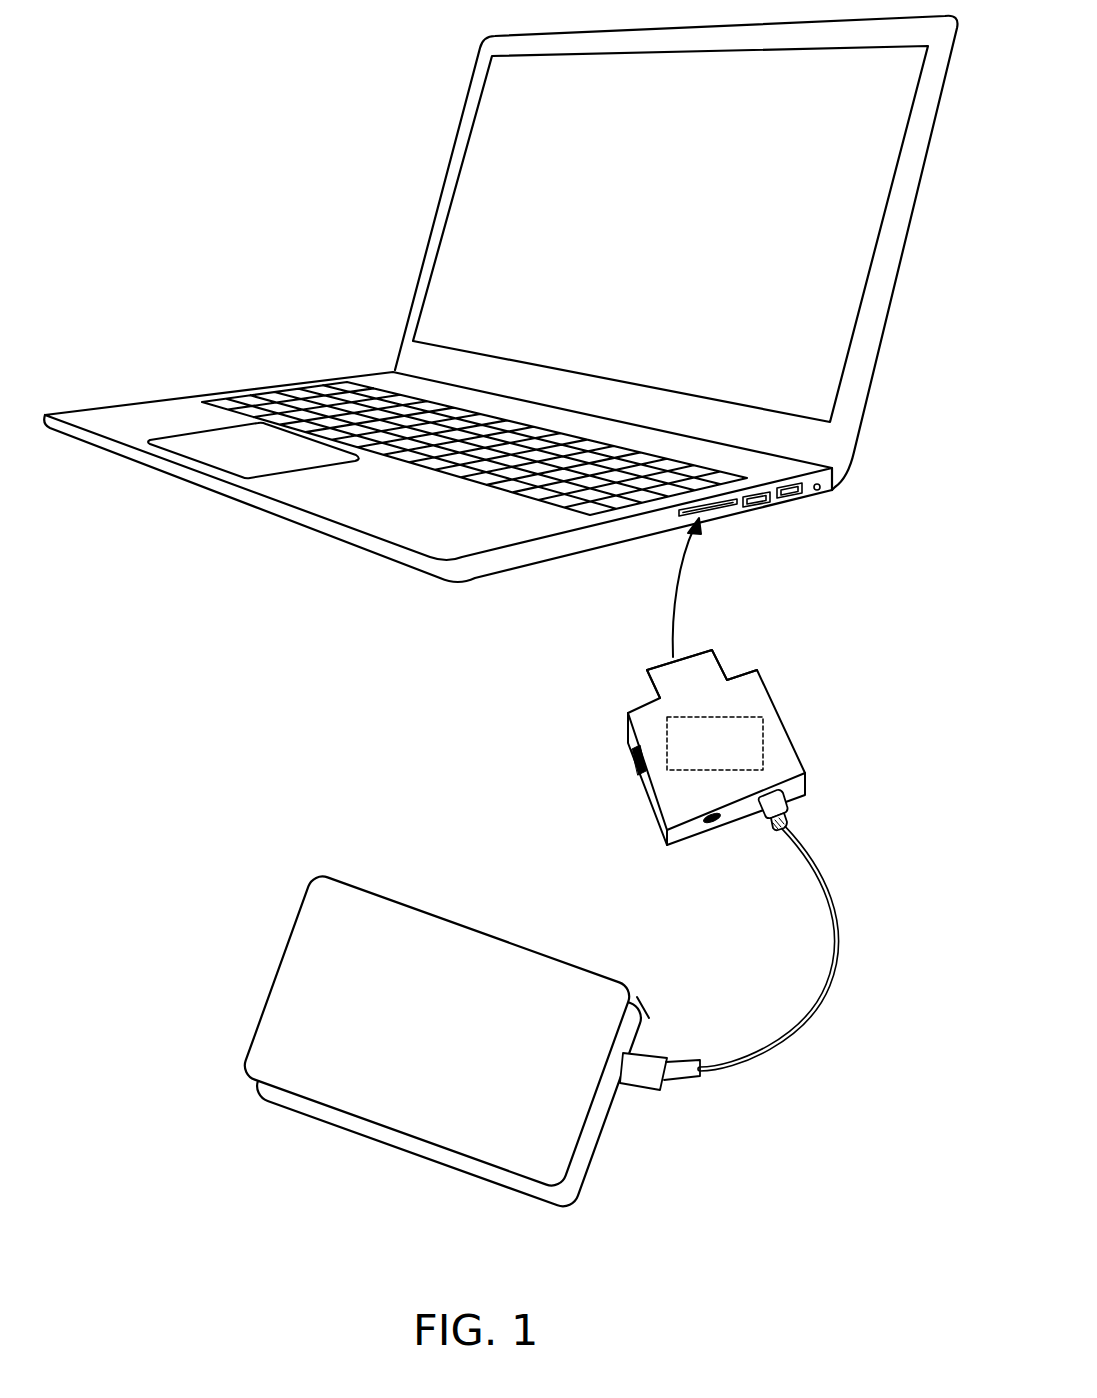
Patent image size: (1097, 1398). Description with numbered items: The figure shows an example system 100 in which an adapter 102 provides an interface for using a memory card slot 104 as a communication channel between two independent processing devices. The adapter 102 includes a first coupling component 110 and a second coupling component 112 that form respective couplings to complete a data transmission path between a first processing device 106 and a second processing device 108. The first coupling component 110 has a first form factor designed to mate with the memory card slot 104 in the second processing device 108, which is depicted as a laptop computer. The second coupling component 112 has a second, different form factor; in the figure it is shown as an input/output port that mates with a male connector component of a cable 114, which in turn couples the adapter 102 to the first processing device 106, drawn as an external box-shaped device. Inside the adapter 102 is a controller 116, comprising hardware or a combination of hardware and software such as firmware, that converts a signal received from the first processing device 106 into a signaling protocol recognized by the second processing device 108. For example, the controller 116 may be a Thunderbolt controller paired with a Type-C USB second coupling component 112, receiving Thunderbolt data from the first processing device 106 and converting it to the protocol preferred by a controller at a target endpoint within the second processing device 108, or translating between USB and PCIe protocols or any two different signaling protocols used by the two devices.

The system 100 is at (188, 104).
The adapter 102 is at (778, 710).
The memory card slot 104 is at (680, 520).
The first processing device 106 is at (431, 1053).
The second processing device 108 is at (860, 426).
The first coupling component 110 is at (697, 673).
The second coupling component 112 is at (712, 845).
The cable 114 is at (832, 945).
The controller 116 is at (699, 767).